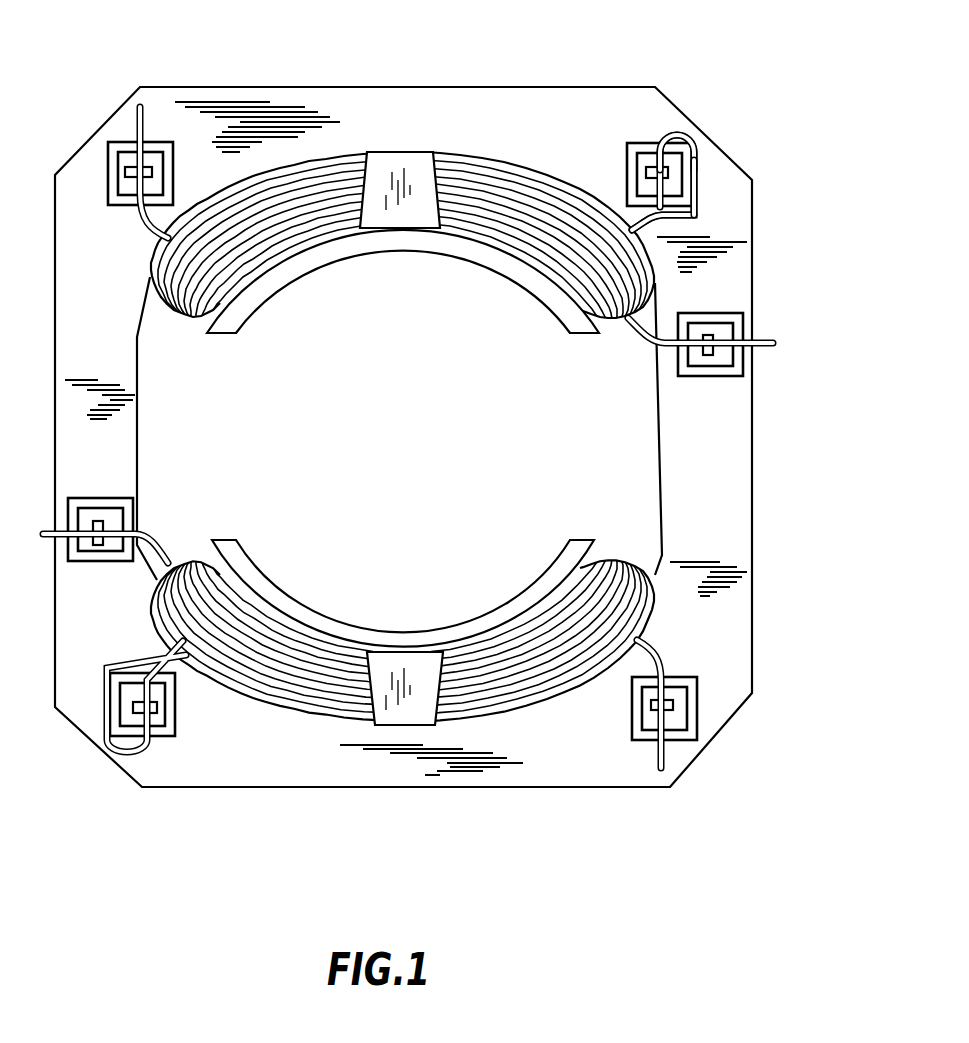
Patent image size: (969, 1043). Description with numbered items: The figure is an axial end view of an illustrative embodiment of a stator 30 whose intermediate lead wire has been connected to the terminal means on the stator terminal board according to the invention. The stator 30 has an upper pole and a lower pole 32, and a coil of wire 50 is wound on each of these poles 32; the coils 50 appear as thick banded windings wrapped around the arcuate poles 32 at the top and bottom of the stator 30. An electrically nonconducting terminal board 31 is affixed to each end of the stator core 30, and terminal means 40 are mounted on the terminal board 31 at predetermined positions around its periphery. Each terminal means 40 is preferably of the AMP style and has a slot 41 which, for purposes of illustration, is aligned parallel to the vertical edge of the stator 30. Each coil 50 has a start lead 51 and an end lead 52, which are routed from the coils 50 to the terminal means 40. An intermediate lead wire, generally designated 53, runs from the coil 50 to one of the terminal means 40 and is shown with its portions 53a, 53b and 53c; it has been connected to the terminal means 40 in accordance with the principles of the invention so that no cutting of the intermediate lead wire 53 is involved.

The stator 30 is at (497, 87).
The terminal board 31 is at (577, 115).
The poles 32 is at (327, 246).
The terminal means 40 is at (627, 175).
The slot 41 is at (650, 147).
The coil of wire 50 is at (610, 323).
The start lead 51 is at (147, 117).
The end lead 52 is at (770, 350).
The intermediate lead wire 53 is at (841, 96).
The intermediate lead wire portion 53a is at (660, 232).
The intermediate lead wire portion 53b is at (692, 155).
The intermediate lead wire portion 53c is at (708, 177).